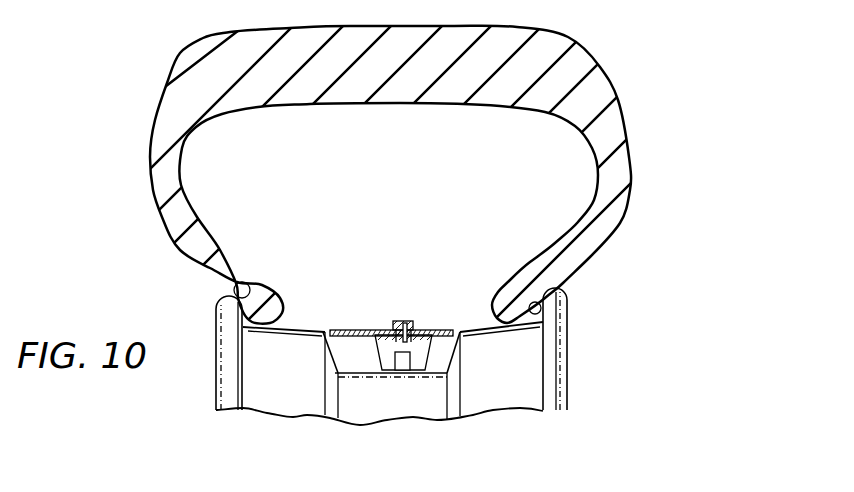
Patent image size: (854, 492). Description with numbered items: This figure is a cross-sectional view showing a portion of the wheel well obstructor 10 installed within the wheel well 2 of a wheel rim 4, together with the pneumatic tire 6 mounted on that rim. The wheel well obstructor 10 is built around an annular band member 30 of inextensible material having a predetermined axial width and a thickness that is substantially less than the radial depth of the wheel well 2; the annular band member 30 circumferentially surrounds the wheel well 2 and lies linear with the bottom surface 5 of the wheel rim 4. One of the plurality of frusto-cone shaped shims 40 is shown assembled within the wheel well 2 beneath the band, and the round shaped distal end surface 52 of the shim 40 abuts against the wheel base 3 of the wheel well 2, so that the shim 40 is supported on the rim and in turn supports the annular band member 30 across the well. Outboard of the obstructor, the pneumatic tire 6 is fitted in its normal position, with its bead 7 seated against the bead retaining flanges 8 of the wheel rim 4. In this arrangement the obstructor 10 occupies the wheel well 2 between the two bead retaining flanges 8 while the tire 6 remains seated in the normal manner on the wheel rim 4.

The wheel well 2 is at (453, 357).
The wheel base 3 is at (348, 365).
The wheel rim 4 is at (571, 386).
The bottom surface 5 is at (310, 327).
The pneumatic tire 6 is at (543, 42).
The bead 7 is at (260, 297).
The bead retaining flanges 8 is at (243, 279).
The wheel well obstructor 10 is at (415, 290).
The annular band member 30 is at (358, 330).
The shim 40 is at (393, 361).
The round shaped distal end surface 52 is at (413, 372).